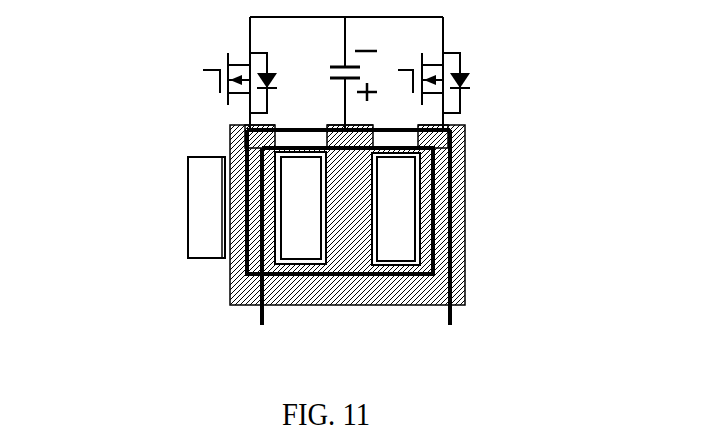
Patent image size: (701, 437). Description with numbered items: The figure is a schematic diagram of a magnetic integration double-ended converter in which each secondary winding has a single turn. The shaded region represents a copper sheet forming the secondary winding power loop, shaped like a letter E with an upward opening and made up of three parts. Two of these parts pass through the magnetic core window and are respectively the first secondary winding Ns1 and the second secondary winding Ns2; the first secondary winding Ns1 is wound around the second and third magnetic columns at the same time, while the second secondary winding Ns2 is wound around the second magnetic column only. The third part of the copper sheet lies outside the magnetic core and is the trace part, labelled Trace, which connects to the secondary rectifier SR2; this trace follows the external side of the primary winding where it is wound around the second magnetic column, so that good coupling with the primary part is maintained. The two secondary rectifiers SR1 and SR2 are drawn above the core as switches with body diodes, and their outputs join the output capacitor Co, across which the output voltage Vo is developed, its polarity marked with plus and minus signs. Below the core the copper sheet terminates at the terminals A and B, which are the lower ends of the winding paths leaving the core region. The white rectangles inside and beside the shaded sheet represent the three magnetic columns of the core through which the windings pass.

The first secondary rectifier SR1 is at (237, 72).
The second secondary rectifier SR2 is at (433, 72).
The output capacitor Co is at (333, 72).
The output voltage Vo is at (372, 76).
The trace part Trace is at (460, 162).
The first secondary winding Ns1 is at (233, 247).
The second secondary winding Ns2 is at (347, 231).
The terminal A is at (261, 326).
The terminal B is at (450, 241).